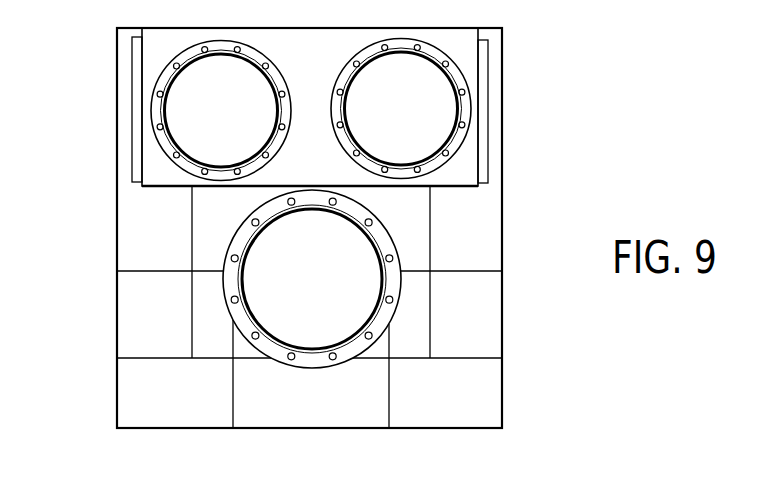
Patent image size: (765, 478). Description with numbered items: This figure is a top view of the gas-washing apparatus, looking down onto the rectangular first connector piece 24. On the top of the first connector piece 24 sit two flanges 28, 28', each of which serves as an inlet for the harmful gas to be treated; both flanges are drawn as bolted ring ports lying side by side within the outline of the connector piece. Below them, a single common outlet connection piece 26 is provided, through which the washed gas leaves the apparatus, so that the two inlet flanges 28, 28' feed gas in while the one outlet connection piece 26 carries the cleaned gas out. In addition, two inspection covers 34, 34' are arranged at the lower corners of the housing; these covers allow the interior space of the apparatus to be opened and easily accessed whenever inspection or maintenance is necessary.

The first connector piece 24 is at (457, 52).
The flange 28 is at (166, 111).
The flange 28' is at (459, 109).
The common outlet connection piece 26 is at (228, 243).
The inspection cover 34 is at (137, 393).
The inspection cover 34' is at (492, 393).